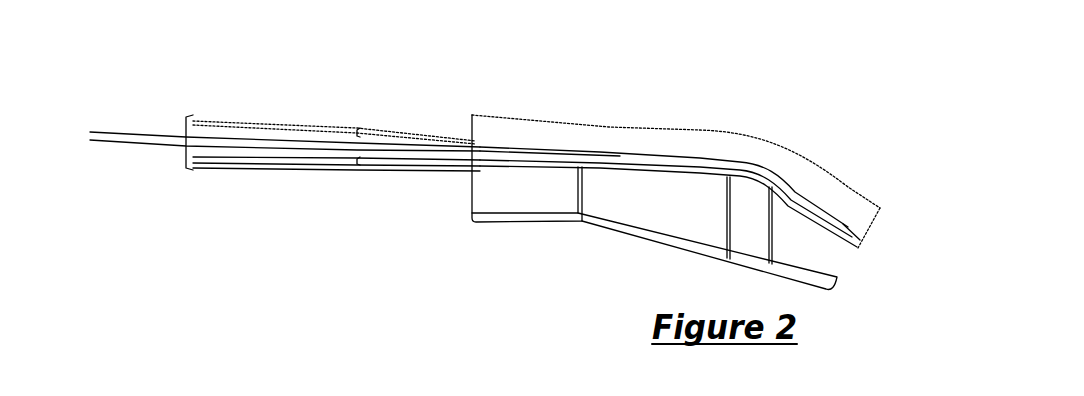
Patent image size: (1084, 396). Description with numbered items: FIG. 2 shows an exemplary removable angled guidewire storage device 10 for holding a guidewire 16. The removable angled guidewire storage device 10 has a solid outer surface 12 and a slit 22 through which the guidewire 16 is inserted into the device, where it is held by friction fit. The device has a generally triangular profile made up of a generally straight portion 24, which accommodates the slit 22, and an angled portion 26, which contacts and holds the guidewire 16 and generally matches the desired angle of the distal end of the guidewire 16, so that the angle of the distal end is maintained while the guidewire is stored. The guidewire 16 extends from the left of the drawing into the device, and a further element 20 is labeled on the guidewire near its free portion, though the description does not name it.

The removable angled guidewire storage device 10 is at (485, 189).
The solid outer surface 12 is at (609, 127).
The guidewire 16 is at (838, 222).
The rod 20 is at (252, 157).
The slit 22 is at (470, 167).
The generally straight portion 24 is at (492, 215).
The angled portion 26 is at (798, 170).